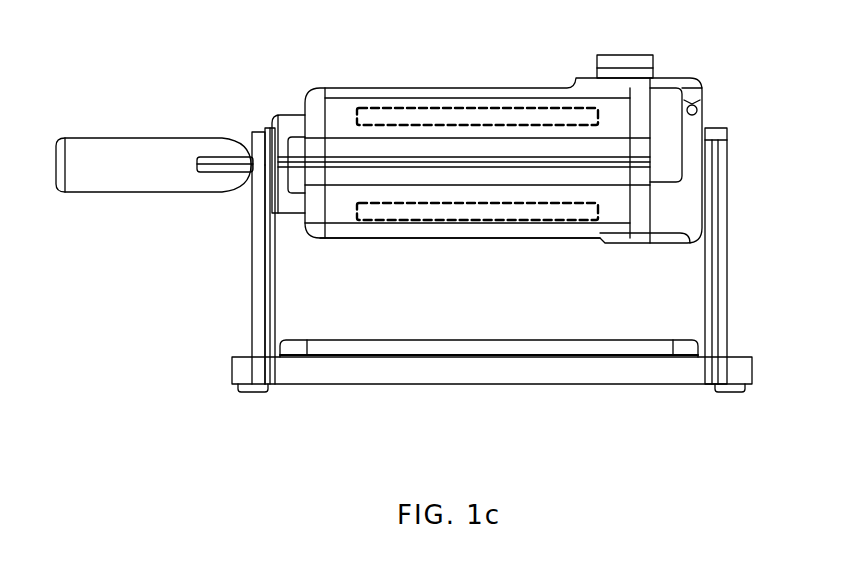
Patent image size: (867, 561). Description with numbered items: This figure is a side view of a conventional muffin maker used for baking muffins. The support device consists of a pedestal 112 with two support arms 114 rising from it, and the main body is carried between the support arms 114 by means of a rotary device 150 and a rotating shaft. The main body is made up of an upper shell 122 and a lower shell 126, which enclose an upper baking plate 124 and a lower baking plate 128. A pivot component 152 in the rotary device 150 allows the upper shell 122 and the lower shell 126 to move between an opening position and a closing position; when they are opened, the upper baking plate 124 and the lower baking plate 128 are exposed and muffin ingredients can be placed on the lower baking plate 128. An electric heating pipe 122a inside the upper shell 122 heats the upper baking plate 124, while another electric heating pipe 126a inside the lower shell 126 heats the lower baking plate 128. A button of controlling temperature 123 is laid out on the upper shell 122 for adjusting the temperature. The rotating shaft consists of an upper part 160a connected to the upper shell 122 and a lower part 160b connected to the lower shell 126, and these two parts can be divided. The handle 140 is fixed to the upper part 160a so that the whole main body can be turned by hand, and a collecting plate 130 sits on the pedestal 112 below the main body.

The pedestal 112 is at (342, 377).
The support arms 114 is at (263, 345).
The upper shell 122 is at (405, 93).
The electric heating pipe 122a is at (488, 108).
The button of controlling temperature 123 is at (630, 62).
The upper baking plate 124 is at (310, 157).
The lower shell 126 is at (390, 233).
The electric heating pipe 126a is at (488, 220).
The lower baking plate 128 is at (308, 173).
The collecting plate 130 is at (583, 343).
The handle 140 is at (130, 158).
The rotary device 150 is at (727, 165).
The pivot component 152 is at (697, 103).
The upper part 160a is at (253, 138).
The lower part 160b is at (253, 192).